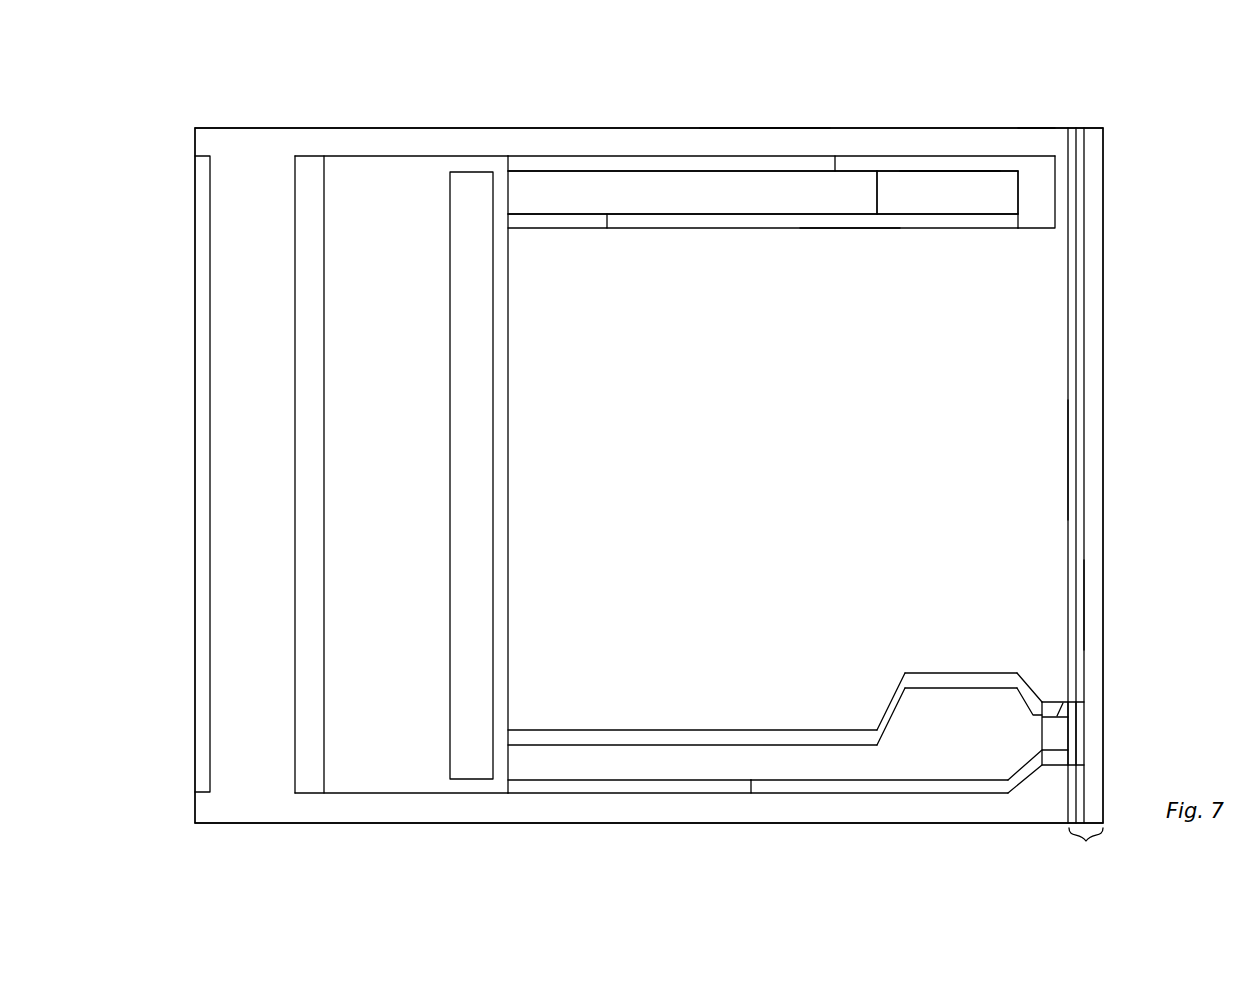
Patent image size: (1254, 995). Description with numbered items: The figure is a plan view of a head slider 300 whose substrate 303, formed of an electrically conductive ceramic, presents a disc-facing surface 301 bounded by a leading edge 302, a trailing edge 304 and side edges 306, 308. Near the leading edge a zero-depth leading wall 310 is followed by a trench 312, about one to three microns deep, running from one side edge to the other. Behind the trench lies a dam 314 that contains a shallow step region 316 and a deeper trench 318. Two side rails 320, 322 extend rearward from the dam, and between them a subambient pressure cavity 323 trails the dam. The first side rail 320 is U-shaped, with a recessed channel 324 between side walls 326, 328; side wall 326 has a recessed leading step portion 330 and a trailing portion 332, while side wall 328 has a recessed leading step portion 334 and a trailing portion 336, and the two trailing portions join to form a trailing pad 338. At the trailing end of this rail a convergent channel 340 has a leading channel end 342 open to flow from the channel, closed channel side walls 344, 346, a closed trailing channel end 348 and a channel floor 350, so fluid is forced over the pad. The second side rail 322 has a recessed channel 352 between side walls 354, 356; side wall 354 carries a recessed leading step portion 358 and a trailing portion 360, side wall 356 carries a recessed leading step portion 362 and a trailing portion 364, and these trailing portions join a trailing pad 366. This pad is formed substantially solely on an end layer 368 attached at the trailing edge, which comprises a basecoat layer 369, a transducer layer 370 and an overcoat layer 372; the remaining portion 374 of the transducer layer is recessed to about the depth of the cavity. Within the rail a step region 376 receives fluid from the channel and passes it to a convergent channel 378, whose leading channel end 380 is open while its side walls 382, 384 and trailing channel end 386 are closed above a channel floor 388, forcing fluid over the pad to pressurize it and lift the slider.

The slider 300 is at (158, 150).
The disc-facing surface 301 is at (767, 128).
The leading edge 302 is at (195, 705).
The substrate 303 is at (1020, 140).
The trailing edge 304 is at (1072, 465).
The side edge 306 is at (608, 127).
The side edge 308 is at (730, 822).
The leading wall 310 is at (202, 232).
The trench 312 is at (372, 288).
The dam 314 is at (382, 758).
The step region 316 is at (310, 753).
The trench 318 is at (470, 365).
The side rail 320 is at (655, 238).
The side rail 322 is at (602, 722).
The subambient pressure cavity 323 is at (644, 474).
The recessed channel 324 is at (692, 192).
The side wall 326 is at (974, 158).
The side wall 328 is at (845, 238).
The recessed leading step portion 330 is at (540, 160).
The trailing portion 332 is at (885, 165).
The recessed leading step portion 334 is at (563, 220).
The trailing portion 336 is at (748, 222).
The trailing pad 338 is at (1035, 211).
The convergent channel 340 is at (979, 224).
The leading channel end 342 is at (885, 200).
The channel side wall 344 is at (929, 168).
The channel side wall 346 is at (933, 214).
The trailing channel end 348 is at (1033, 190).
The channel floor 350 is at (953, 200).
The recessed channel 352 is at (629, 766).
The side wall 354 is at (813, 732).
The side wall 356 is at (795, 788).
The recessed leading step portion 358 is at (681, 730).
The trailing portion 360 is at (935, 677).
The recessed leading step portion 362 is at (583, 788).
The trailing portion 364 is at (893, 788).
The trailing pad 366 is at (1075, 720).
The end layer 368 is at (1099, 851).
The basecoat layer 369 is at (1071, 128).
The transducer layer 370 is at (1080, 128).
The overcoat layer 372 is at (1094, 128).
The remaining portion 374 is at (1082, 605).
The step region 376 is at (990, 688).
The convergent channel 378 is at (1050, 700).
The leading channel end 380 is at (1030, 731).
The side wall 382 is at (1070, 701).
The side wall 384 is at (1045, 766).
The trailing channel end 386 is at (1084, 738).
The channel floor 388 is at (1055, 752).